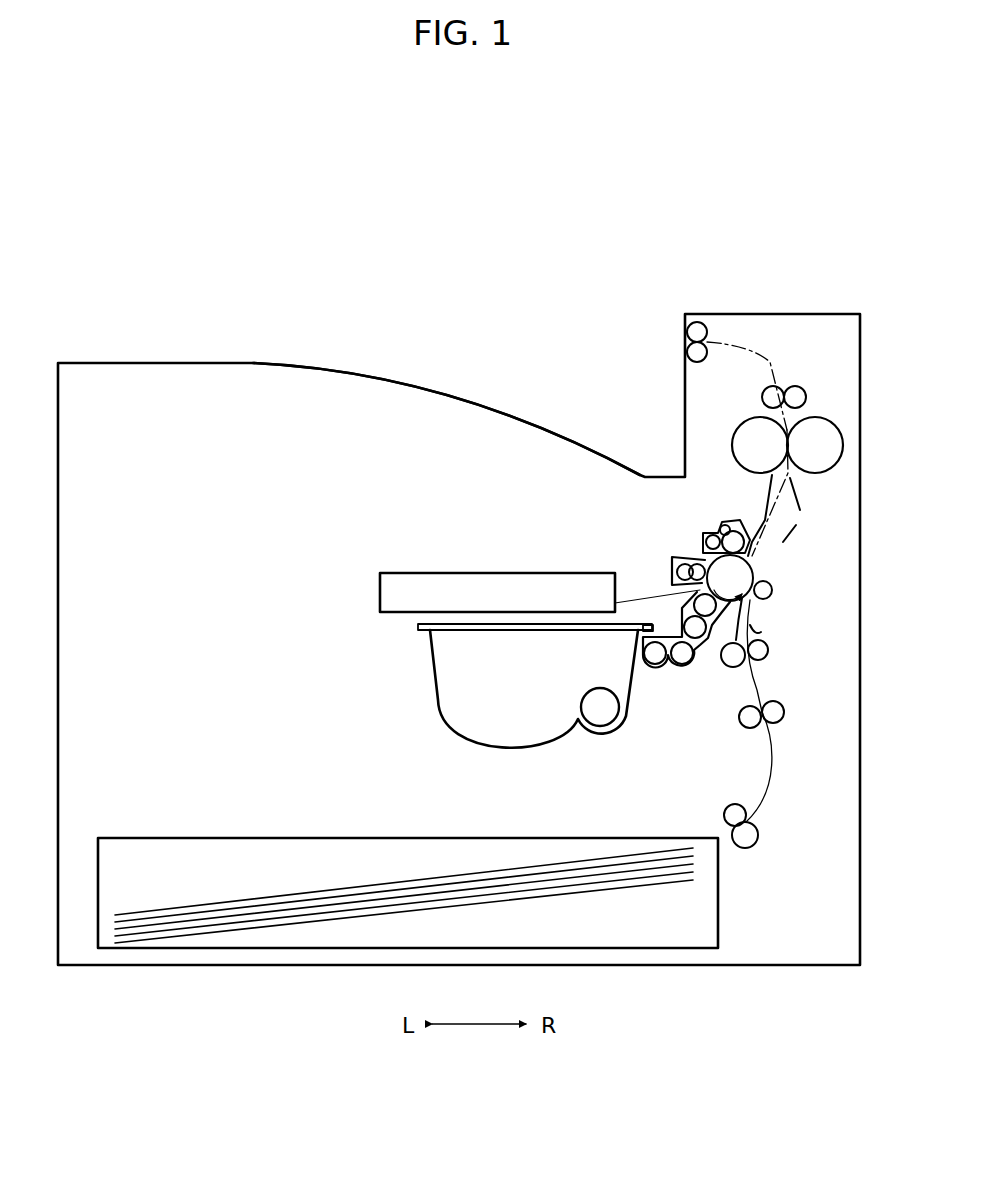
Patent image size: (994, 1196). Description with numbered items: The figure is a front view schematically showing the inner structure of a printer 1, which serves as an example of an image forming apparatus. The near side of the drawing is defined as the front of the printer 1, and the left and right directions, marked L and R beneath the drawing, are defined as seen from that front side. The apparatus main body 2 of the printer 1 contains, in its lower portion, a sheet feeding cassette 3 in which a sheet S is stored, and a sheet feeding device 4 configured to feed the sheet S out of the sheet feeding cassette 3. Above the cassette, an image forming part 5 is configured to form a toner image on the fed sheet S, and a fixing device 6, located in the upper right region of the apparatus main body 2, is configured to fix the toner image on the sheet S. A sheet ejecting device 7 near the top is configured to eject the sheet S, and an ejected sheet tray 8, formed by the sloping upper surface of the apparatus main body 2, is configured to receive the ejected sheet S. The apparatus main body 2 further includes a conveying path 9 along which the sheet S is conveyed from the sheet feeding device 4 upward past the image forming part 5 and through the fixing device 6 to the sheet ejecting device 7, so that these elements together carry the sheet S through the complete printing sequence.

The printer 1 is at (134, 247).
The apparatus main body 2 is at (98, 362).
The sheet feeding cassette 3 is at (255, 837).
The sheet feeding device 4 is at (715, 811).
The image forming part 5 is at (620, 547).
The fixing device 6 is at (837, 414).
The sheet ejecting device 7 is at (681, 332).
The ejected sheet tray 8 is at (491, 405).
The conveying path 9 is at (770, 758).
The sheet S is at (205, 905).